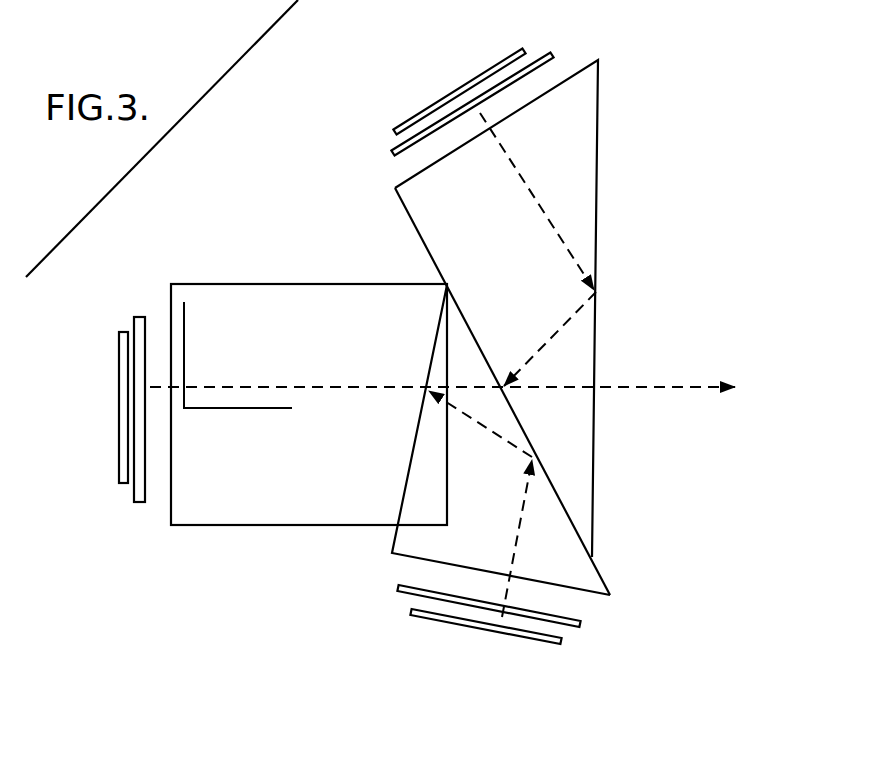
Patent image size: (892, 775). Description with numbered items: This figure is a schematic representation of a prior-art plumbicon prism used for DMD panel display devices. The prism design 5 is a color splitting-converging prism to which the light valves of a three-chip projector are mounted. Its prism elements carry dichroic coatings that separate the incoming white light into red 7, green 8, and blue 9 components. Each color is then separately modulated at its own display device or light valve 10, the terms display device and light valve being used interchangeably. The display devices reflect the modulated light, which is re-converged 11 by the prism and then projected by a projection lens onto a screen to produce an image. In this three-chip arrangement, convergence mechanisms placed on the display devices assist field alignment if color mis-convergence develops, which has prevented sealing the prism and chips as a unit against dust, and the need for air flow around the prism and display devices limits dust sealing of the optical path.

The prism design 5 is at (434, 314).
The red 7 is at (607, 136).
The green 8 is at (257, 534).
The blue 9 is at (592, 603).
The light valve 10 is at (451, 633).
The re-converged light 11 is at (660, 374).